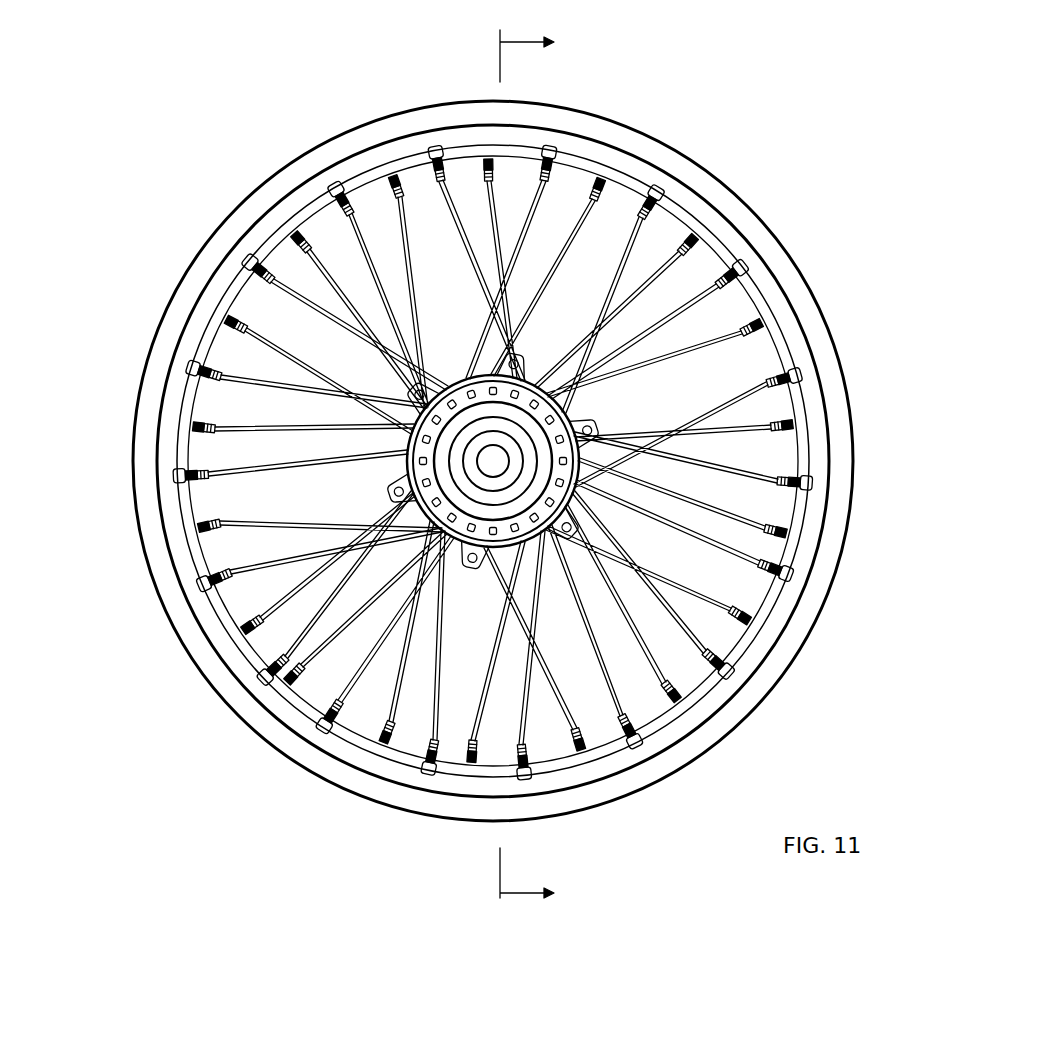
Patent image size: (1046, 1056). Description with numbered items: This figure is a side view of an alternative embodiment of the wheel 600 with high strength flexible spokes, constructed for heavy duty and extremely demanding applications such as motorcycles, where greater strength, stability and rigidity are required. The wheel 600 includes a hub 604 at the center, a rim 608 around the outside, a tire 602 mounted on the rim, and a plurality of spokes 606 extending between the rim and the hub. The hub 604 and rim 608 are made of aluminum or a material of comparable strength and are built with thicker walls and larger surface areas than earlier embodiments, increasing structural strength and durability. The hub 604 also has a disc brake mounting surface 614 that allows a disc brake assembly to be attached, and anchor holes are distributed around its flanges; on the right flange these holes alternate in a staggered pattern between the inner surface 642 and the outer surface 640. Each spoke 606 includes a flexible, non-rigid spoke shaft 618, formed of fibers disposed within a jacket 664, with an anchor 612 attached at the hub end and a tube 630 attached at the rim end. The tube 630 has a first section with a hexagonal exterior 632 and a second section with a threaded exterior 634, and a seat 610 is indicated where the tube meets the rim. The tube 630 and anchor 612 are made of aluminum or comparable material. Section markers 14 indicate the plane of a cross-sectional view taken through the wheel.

The wheel 600 is at (776, 130).
The tire 602 is at (668, 150).
The hub 604 is at (540, 468).
The spokes 606 is at (332, 292).
The rim 608 is at (772, 290).
The nipple seat 610 is at (253, 260).
The anchor 612 is at (400, 493).
The disc brake mounting surface 614 is at (448, 422).
The spoke shaft 618 is at (370, 323).
The tube 630 is at (262, 262).
The hexagonal exterior 632 is at (250, 277).
The threaded exterior 634 is at (247, 270).
The outer surface 640 is at (452, 540).
The inner surface 642 is at (282, 672).
The jacket 664 is at (403, 455).
The section line 14- 14 is at (549, 469).